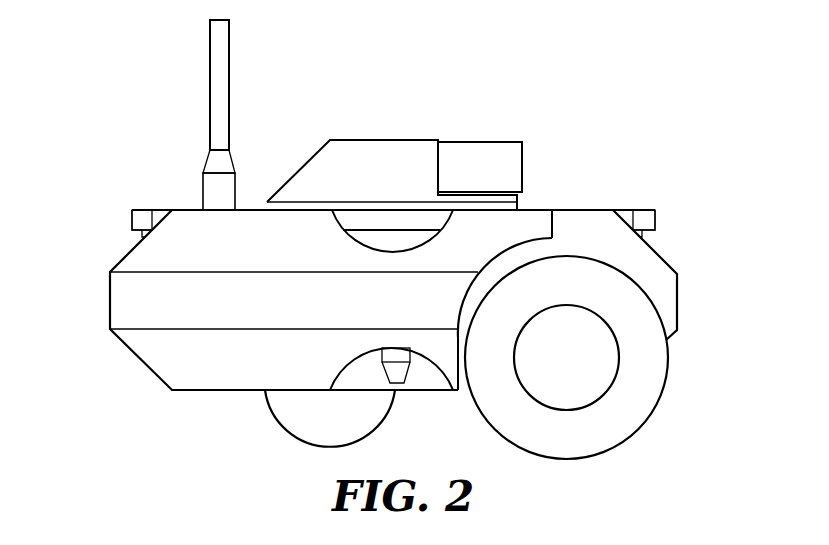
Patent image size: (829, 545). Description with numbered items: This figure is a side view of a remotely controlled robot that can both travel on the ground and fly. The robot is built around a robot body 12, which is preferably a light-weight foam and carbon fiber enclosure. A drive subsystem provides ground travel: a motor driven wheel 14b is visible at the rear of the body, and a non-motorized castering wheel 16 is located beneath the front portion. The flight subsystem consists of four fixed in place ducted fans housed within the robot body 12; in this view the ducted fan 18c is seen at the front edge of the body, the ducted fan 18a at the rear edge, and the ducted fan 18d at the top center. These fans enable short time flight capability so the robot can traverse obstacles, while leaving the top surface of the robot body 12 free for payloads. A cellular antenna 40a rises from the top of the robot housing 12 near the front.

The robot body 12 is at (138, 296).
The motor driven wheel 14b is at (632, 403).
The non-motorized castering wheel 16 is at (303, 417).
The ducted fan 18a is at (635, 215).
The ducted fan 18c is at (148, 215).
The ducted fan 18d is at (387, 225).
The cellular antenna 40a is at (217, 36).